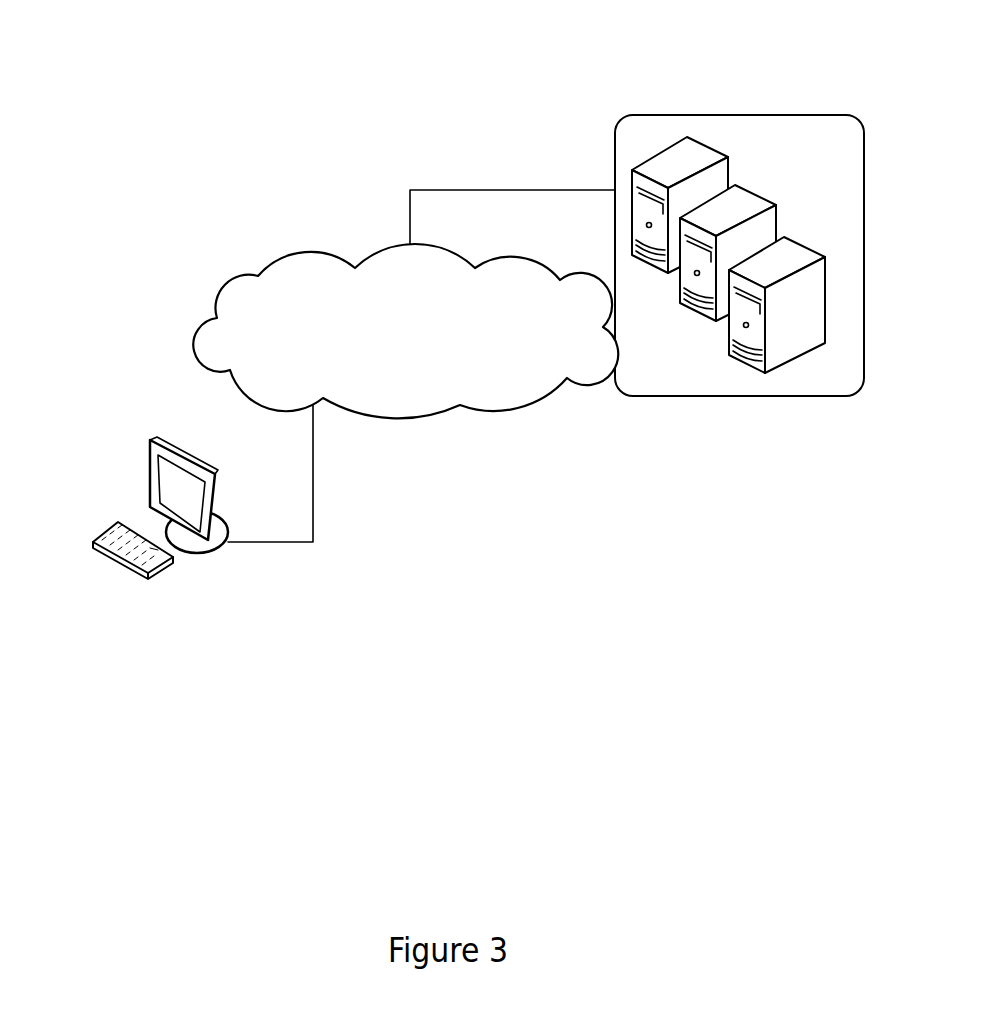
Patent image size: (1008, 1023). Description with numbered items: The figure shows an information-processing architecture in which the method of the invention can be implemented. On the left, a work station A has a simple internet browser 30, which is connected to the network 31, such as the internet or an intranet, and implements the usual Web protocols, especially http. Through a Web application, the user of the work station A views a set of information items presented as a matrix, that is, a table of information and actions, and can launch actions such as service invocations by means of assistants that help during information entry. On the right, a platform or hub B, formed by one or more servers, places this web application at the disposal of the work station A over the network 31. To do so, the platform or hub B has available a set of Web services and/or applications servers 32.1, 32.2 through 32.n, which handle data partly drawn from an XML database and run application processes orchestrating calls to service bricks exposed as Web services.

The internet browser 30 is at (173, 483).
The network 31 is at (408, 418).
The Web services and/or applications server 32.1 is at (662, 155).
The Web services and/or applications server 32.2 is at (763, 192).
The Web services and/or applications server 32.n is at (808, 248).
The work station A is at (176, 520).
The platform or hub B is at (735, 397).